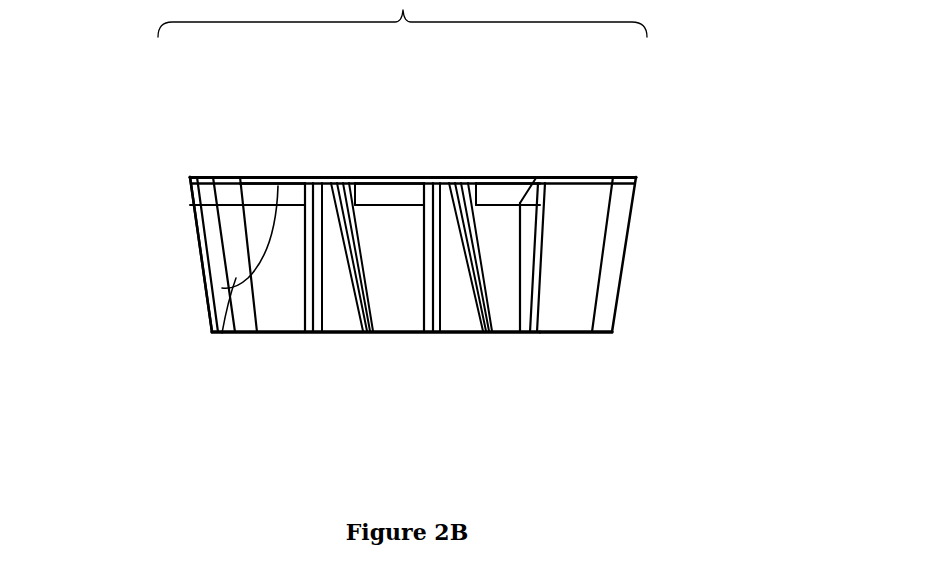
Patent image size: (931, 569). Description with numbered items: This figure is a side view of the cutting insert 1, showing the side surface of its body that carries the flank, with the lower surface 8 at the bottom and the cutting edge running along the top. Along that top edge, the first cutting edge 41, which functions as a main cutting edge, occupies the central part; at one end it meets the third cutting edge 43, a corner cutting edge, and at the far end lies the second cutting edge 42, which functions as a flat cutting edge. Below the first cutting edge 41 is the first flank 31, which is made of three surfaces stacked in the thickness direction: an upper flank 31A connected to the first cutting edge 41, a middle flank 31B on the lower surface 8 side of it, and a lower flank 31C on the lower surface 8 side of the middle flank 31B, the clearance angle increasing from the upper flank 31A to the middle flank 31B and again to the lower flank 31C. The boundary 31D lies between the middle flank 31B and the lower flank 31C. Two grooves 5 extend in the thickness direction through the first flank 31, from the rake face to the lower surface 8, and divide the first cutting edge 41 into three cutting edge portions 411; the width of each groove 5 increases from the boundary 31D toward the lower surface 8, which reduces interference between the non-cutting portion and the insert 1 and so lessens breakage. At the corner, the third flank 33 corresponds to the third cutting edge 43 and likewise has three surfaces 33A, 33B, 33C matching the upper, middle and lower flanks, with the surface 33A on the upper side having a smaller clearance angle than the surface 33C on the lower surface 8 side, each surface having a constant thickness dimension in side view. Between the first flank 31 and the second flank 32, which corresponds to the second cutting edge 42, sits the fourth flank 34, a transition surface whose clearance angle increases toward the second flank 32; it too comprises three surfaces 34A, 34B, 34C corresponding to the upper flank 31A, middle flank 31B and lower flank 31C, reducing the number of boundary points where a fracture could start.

The insert 1 is at (644, 134).
The grooves 5 is at (338, 323).
The lower surface 8 is at (575, 333).
The first flank 31 is at (150, 352).
The upper flank 31A is at (207, 262).
The middle flank 31B is at (222, 333).
The lower flank 31C is at (283, 330).
The boundary 31D is at (291, 175).
The second flank 32 is at (577, 271).
The third flank 33 is at (150, 118).
The surface on the upper surface side 33A is at (198, 176).
The surface of the third flank 33B is at (223, 192).
The surface on the lower surface side 33C is at (223, 224).
The fourth flank 34 is at (747, 165).
The surface of the fourth flank 34A is at (637, 181).
The surface of the fourth flank 34B is at (537, 193).
The surface of the fourth flank 34C is at (527, 233).
The first cutting edge 41 is at (218, 85).
The cutting edge portions 411 is at (266, 175).
The second cutting edge 42 is at (577, 175).
The third cutting edge 43 is at (227, 175).